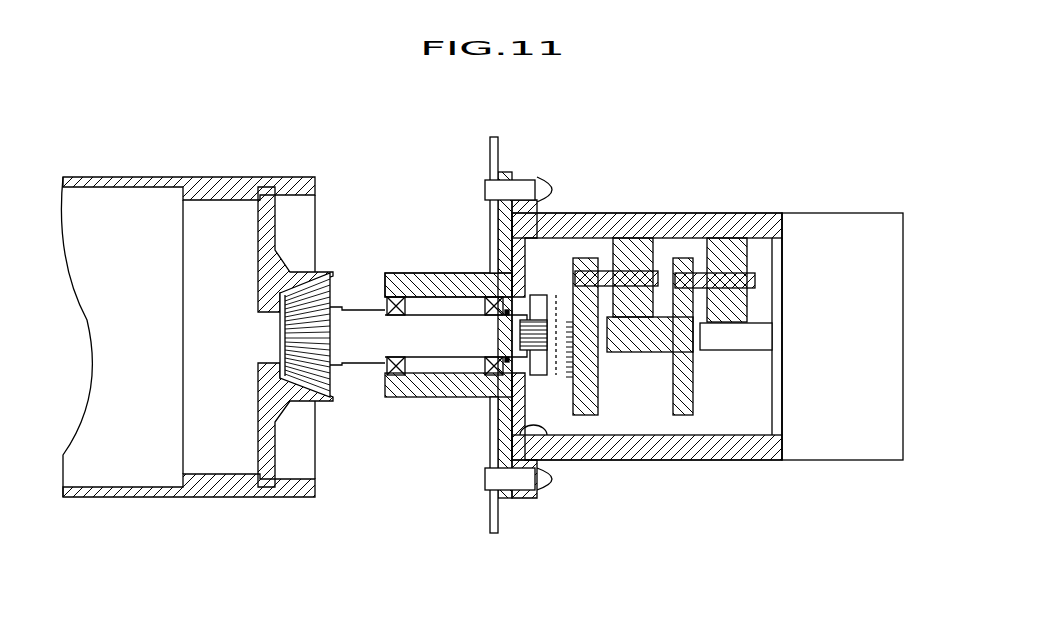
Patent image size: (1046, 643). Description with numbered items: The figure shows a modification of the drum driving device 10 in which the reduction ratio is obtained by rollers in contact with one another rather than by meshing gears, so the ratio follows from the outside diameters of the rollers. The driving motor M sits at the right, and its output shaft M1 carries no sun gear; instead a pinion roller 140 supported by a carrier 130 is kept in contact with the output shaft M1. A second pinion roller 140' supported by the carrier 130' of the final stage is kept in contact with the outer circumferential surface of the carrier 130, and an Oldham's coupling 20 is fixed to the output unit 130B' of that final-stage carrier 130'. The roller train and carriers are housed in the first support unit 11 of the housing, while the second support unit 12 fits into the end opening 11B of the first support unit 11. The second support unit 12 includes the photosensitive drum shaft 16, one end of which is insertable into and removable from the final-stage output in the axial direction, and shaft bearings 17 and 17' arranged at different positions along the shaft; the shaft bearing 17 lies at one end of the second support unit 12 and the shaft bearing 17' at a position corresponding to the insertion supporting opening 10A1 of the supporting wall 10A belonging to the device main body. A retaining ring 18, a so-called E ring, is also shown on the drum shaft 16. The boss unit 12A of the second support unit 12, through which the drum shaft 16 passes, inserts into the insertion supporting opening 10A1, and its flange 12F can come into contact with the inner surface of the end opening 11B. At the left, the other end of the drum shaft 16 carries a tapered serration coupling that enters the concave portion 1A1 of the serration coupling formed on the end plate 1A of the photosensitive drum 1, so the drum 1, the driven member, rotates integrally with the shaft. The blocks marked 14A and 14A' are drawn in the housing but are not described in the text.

The photosensitive drum 1 is at (153, 180).
The end plate 1A is at (290, 177).
The concave portion 1A1 is at (337, 293).
The drum driving device 10 is at (612, 105).
The supporting wall 10A is at (488, 512).
The insertion supporting opening 10A1 is at (478, 398).
The first support unit 11 is at (555, 212).
The end opening 11B is at (547, 432).
The second support unit 12 is at (405, 273).
The boss unit 12A is at (428, 283).
The flange 12F is at (500, 258).
The bearing block 14A is at (727, 231).
The bearing block 14A' is at (645, 229).
The pinion roller 140 is at (740, 229).
The pinion roller 140' is at (616, 227).
The carrier 130 is at (679, 380).
The carrier 130' is at (612, 379).
The output unit 130B' is at (608, 428).
The photosensitive drum shaft 16 is at (418, 347).
The shaft bearing 17 is at (388, 370).
The shaft bearing 17' is at (465, 382).
The retaining ring 18 is at (507, 313).
The Oldham's coupling 20 is at (553, 375).
The driving motor M is at (893, 255).
The output shaft M1 is at (755, 337).